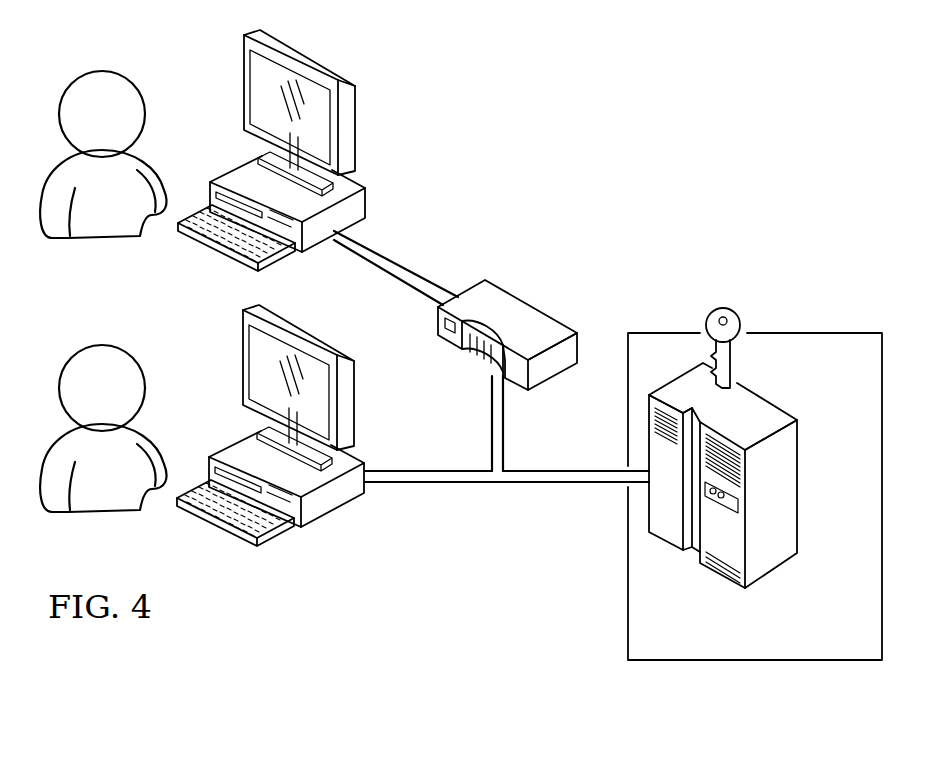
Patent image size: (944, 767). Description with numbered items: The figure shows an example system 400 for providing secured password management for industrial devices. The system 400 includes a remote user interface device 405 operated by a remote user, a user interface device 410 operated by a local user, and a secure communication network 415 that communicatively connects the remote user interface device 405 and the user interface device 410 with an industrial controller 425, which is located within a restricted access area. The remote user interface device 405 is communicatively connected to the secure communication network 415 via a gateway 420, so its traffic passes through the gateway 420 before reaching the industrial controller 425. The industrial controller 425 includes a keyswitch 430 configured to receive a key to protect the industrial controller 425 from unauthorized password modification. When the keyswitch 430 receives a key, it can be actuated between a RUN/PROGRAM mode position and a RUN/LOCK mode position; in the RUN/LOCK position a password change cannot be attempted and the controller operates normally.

The system 400 is at (571, 173).
The remote user interface device 405 is at (303, 52).
The user interface device 410 is at (303, 323).
The secure communication network 415 is at (398, 485).
The gateway 420 is at (520, 313).
The industrial controller 425 is at (797, 545).
The keyswitch 430 is at (735, 365).